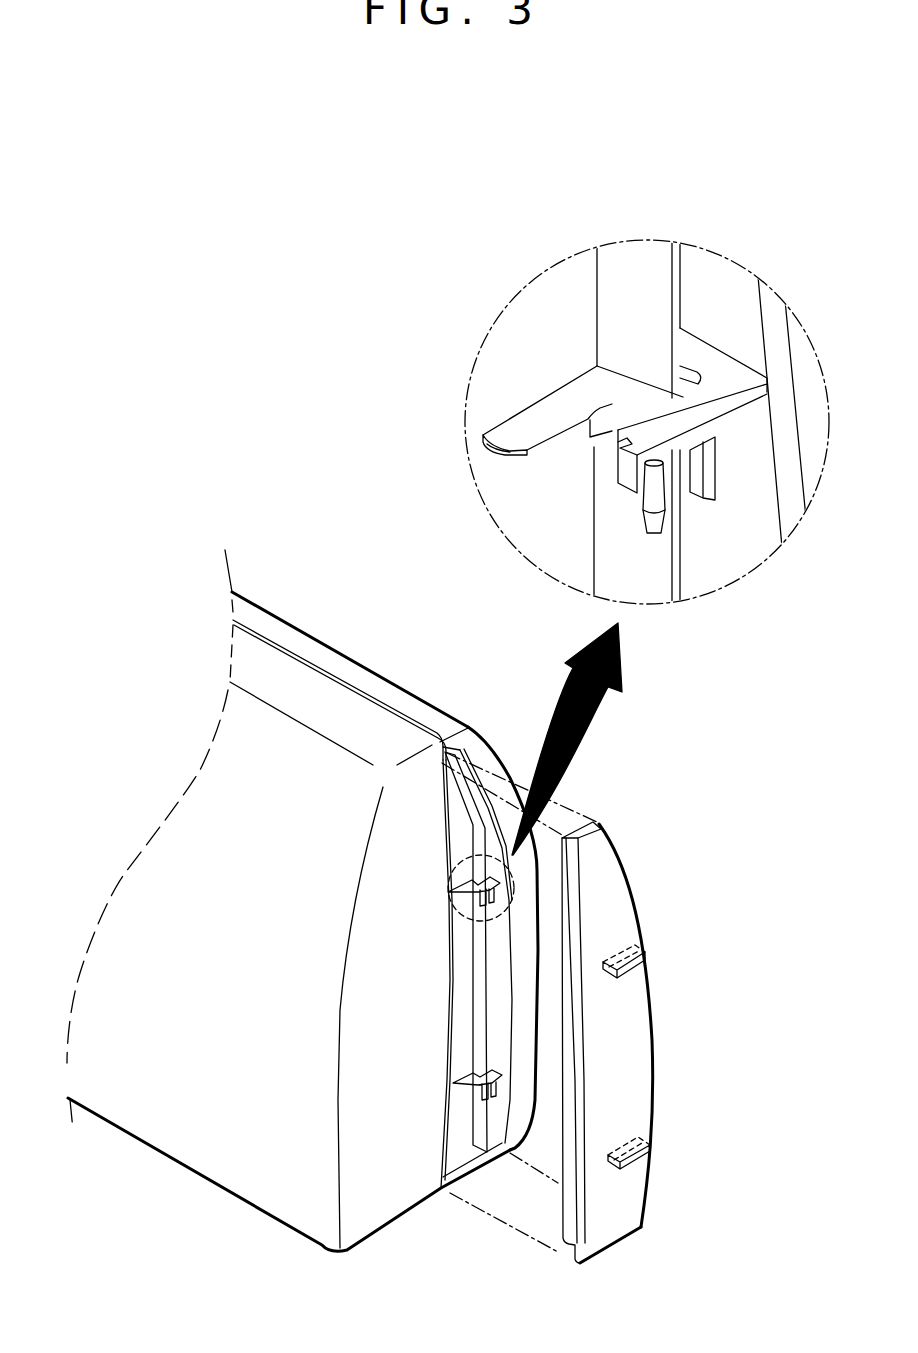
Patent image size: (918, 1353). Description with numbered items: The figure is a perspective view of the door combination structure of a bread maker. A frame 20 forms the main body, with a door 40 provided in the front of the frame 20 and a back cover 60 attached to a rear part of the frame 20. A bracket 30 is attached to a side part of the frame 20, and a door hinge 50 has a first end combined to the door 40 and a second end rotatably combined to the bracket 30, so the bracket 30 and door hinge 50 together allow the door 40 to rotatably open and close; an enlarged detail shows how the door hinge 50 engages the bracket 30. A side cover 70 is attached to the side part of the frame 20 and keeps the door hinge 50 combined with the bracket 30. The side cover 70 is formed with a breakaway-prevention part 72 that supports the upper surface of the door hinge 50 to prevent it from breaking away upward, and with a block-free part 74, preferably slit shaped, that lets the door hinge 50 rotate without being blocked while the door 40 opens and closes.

The frame 20 is at (462, 727).
The bracket 30 is at (518, 400).
The door 40 is at (290, 622).
The door hinge 50 is at (708, 335).
The back cover 60 is at (243, 1203).
The side cover 70 is at (643, 898).
The breakaway-prevention part 72 is at (647, 948).
The block-free part 74 is at (647, 962).